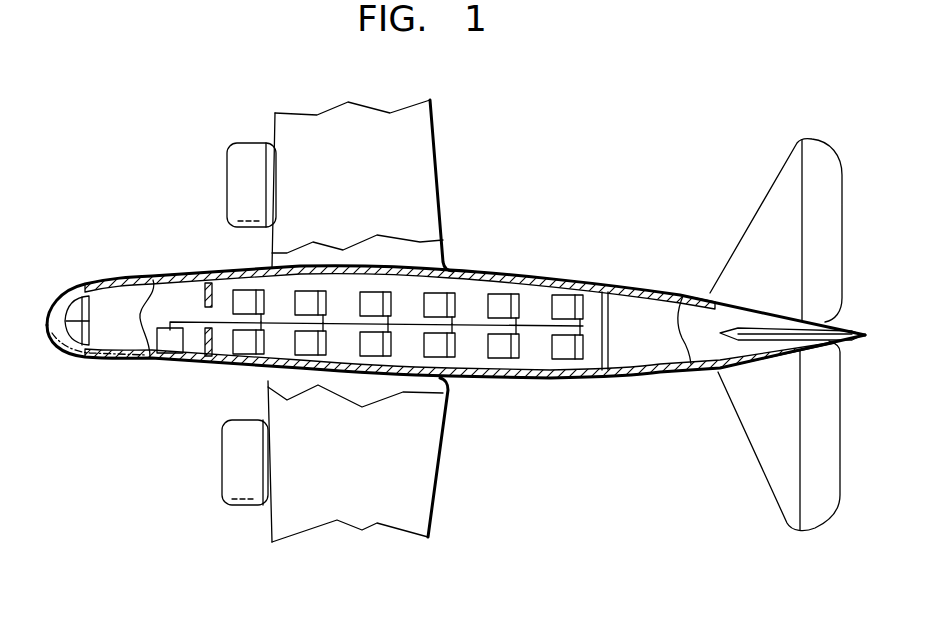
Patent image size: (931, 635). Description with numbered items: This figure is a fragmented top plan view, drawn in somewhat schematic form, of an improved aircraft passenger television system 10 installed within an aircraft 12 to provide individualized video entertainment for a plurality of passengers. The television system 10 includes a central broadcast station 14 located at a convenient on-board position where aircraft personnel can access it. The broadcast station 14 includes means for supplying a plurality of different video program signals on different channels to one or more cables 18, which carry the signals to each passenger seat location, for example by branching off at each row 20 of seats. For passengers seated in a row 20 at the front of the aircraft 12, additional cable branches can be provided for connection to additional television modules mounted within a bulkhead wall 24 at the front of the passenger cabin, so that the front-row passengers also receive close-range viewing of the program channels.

The television system 10 is at (152, 272).
The aircraft 12 is at (447, 230).
The central broadcast station 14 is at (167, 343).
The cables 18 is at (215, 323).
The row of seats 20 is at (352, 301).
The bulkhead wall 24 is at (208, 297).